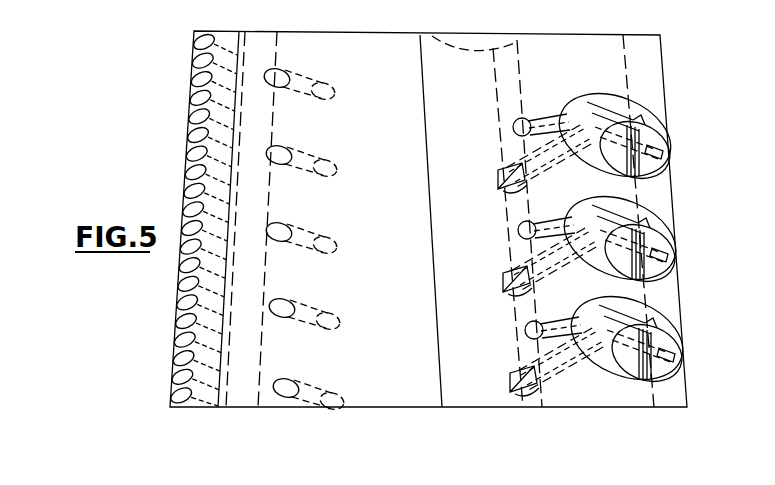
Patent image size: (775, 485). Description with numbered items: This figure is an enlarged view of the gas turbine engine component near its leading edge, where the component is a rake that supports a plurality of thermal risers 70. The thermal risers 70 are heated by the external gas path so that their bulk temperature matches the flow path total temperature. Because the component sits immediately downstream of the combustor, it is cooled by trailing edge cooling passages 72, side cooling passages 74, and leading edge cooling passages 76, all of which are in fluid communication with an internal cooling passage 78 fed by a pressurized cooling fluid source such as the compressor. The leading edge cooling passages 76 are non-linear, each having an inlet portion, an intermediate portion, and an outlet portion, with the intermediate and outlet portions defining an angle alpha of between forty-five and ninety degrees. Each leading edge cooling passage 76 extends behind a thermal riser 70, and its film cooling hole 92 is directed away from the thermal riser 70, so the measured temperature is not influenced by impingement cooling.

The thermal riser 70 is at (676, 270).
The trailing edge cooling passages 72 is at (172, 372).
The side cooling passages 74 is at (283, 315).
The leading edge cooling passages 76 is at (536, 292).
The internal cooling passage 78 is at (463, 392).
The film cooling hole 92 is at (541, 262).